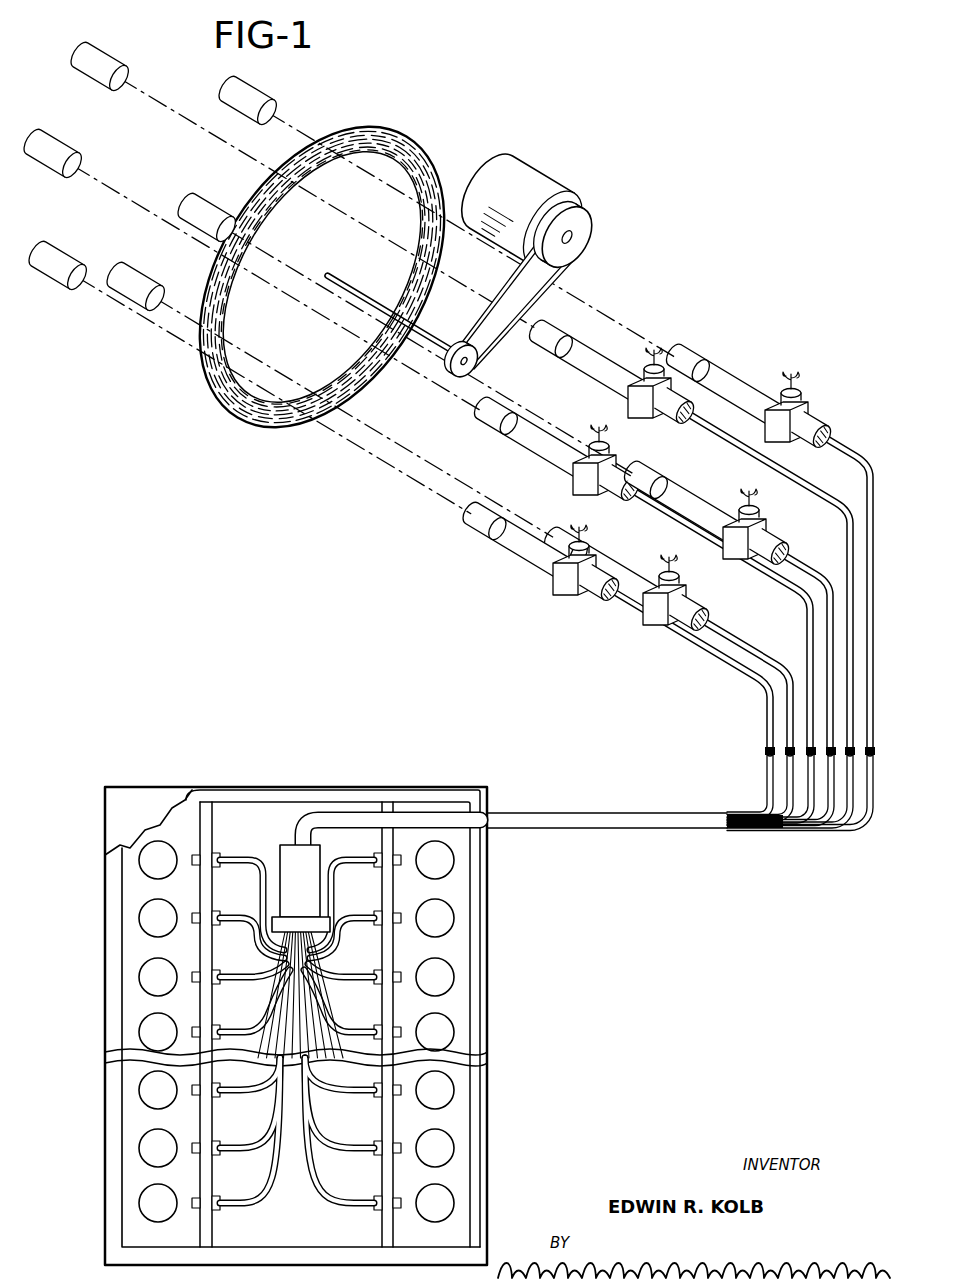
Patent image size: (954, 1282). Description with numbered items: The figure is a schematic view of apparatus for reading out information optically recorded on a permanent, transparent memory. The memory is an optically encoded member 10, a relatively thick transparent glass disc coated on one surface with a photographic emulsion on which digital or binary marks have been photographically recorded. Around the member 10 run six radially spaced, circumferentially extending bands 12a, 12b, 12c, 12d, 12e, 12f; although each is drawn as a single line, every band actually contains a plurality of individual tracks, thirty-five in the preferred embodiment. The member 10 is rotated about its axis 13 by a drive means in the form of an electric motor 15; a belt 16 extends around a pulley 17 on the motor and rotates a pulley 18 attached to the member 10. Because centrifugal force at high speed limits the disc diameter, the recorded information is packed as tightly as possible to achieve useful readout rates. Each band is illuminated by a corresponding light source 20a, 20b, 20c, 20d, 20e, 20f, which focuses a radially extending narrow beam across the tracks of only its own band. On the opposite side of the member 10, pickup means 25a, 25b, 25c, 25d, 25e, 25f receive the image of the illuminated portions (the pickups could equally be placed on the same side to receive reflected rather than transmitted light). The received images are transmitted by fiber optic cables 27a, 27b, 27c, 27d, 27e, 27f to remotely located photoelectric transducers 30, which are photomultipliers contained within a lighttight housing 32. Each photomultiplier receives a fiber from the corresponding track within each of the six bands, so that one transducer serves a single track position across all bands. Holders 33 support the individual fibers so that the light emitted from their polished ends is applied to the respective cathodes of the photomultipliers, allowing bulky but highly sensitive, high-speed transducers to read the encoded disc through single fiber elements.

The optically encoded member 10 is at (215, 383).
The band 12a is at (352, 133).
The band 12b is at (370, 145).
The band 12c is at (383, 150).
The band 12d is at (396, 158).
The band 12e is at (414, 168).
The band 12f is at (426, 178).
The axis 13 is at (343, 275).
The electric motor 15 is at (530, 160).
The belt 16 is at (562, 267).
The pulley 17 is at (585, 212).
The driven pulley 18 is at (466, 376).
The light source 20a is at (240, 90).
The light source 20b is at (207, 207).
The light source 20c is at (133, 300).
The light source 20d is at (58, 283).
The light source 20e is at (66, 150).
The light source 20f is at (108, 62).
The pickup means 25a is at (740, 385).
The pickup means 25b is at (696, 508).
The pickup means 25c is at (638, 622).
The pickup means 25d is at (518, 560).
The pickup means 25e is at (546, 426).
The pickup means 25f is at (620, 350).
The fiber optic cable 27a is at (848, 464).
The fiber optic cable 27b is at (817, 583).
The fiber optic cable 27c is at (738, 640).
The fiber optic cable 27d is at (752, 692).
The fiber optic cable 27e is at (801, 622).
The fiber optic cable 27f is at (831, 516).
The photoelectric transducers 30 is at (145, 915).
The lighttight housing 32 is at (262, 793).
The holders 33 is at (282, 863).